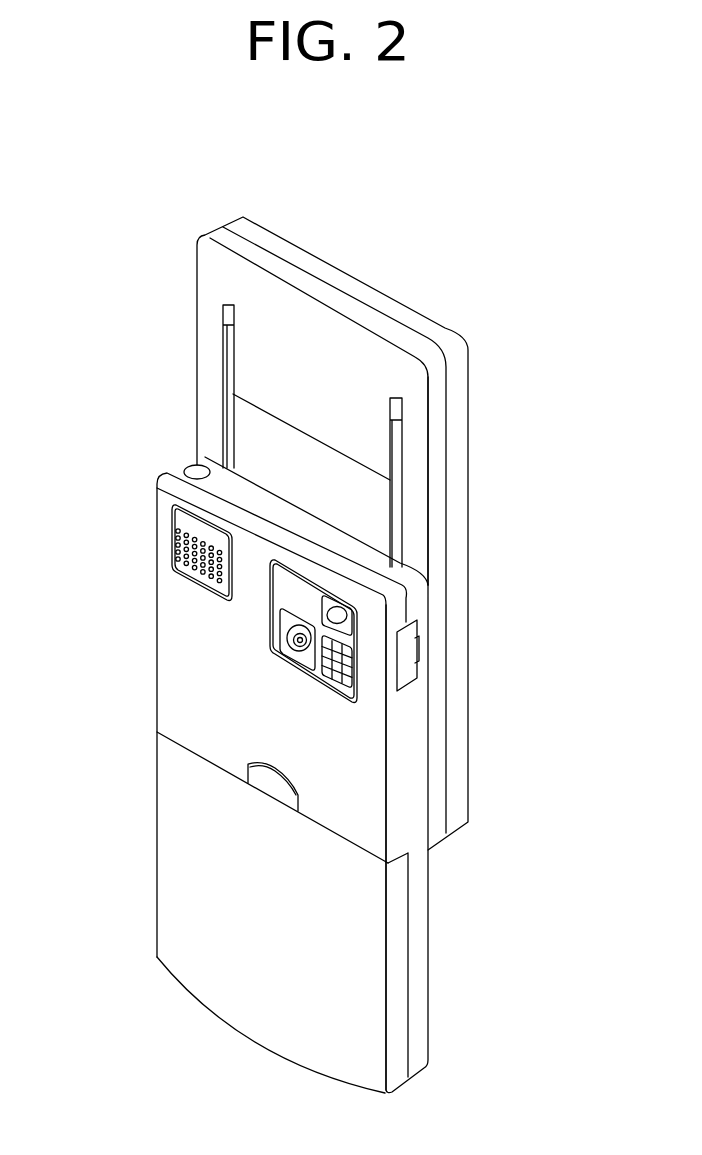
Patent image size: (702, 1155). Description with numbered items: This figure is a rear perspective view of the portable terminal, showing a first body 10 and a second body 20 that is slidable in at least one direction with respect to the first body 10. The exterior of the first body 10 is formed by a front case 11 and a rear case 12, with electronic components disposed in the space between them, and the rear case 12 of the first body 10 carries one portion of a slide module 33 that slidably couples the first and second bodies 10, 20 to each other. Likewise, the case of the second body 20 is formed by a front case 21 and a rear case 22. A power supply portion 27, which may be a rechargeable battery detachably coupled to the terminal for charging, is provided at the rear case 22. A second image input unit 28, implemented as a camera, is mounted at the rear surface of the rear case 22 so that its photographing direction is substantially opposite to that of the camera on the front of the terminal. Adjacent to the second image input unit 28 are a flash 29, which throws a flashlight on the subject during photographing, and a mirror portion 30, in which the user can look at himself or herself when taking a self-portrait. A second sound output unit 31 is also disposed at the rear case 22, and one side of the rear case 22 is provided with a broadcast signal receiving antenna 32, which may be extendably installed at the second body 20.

The first body 10 is at (165, 351).
The front case 11 is at (238, 227).
The rear case 12 is at (222, 238).
The second body 20 is at (133, 645).
The front case 21 is at (420, 877).
The rear case 22 is at (397, 822).
The power supply portion 27 is at (173, 817).
The second image input unit 28 is at (302, 648).
The flash 29 is at (337, 672).
The mirror portion 30 is at (356, 611).
The second sound output unit 31 is at (172, 545).
The broadcast signal receiving antenna 32 is at (193, 469).
The slide module 33 is at (390, 503).